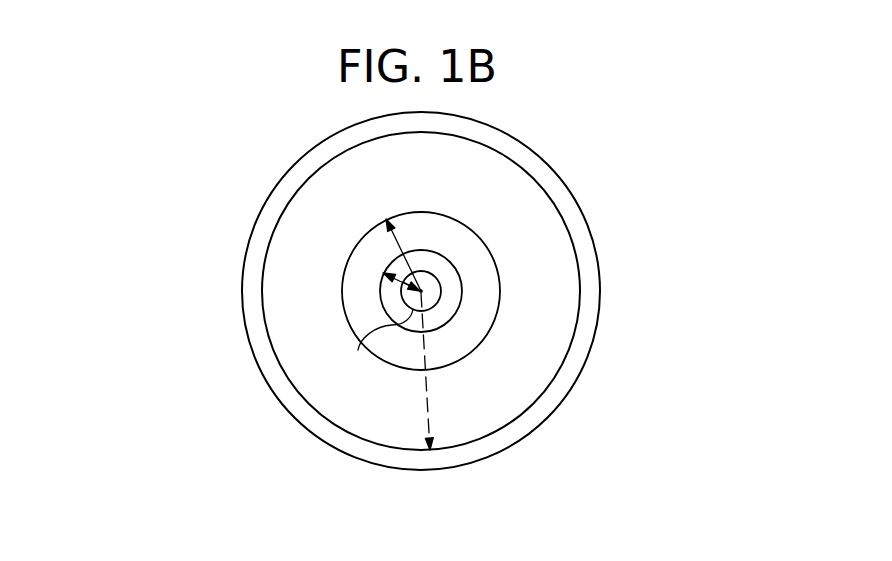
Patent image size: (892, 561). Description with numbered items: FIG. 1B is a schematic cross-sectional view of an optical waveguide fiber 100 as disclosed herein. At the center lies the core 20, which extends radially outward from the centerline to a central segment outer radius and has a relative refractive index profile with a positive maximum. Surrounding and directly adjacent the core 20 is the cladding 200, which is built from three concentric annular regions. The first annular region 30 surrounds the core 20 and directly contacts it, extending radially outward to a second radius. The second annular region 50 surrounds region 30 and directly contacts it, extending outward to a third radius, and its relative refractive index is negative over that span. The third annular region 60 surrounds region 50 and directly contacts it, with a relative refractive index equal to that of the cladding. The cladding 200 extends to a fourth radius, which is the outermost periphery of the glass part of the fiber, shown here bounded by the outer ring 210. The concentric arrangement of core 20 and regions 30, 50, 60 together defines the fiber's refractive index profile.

The optical fiber assembly 100 is at (216, 221).
The outer protective sheath 210 is at (267, 360).
The cladding 200 is at (682, 181).
The third annular region 60 is at (512, 255).
The second annular region 50 is at (472, 277).
The first annular region 30 is at (453, 305).
The core 20 is at (428, 293).